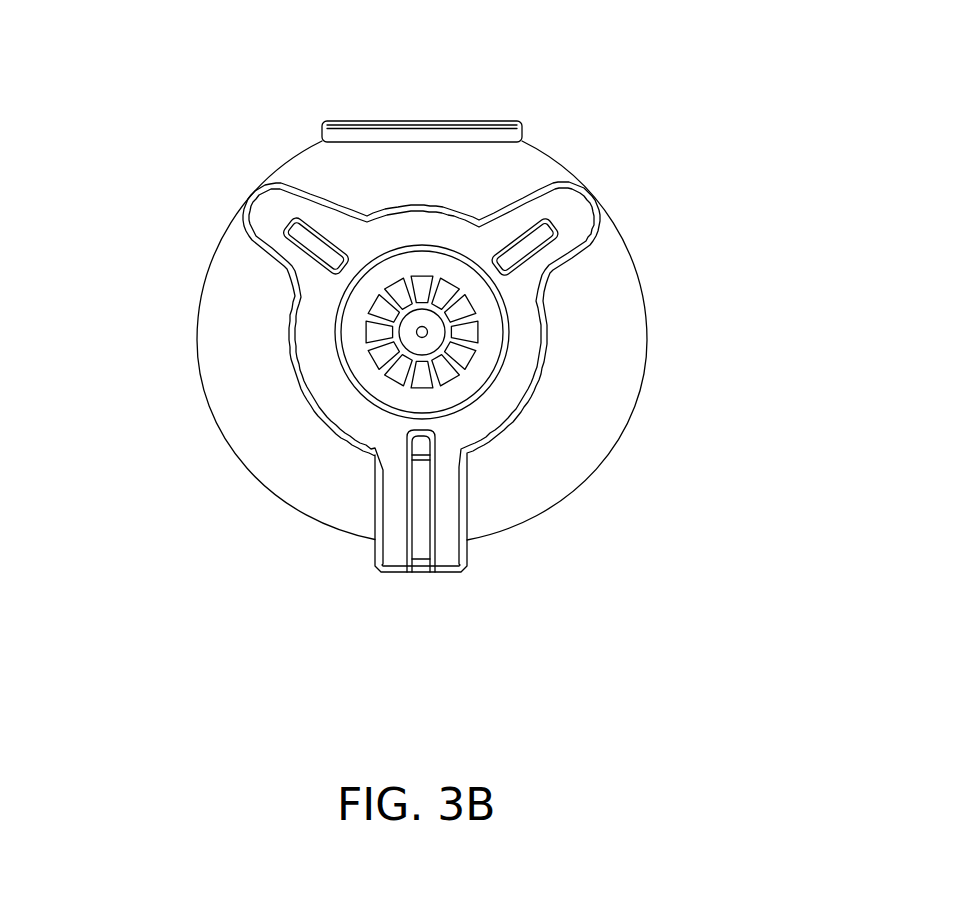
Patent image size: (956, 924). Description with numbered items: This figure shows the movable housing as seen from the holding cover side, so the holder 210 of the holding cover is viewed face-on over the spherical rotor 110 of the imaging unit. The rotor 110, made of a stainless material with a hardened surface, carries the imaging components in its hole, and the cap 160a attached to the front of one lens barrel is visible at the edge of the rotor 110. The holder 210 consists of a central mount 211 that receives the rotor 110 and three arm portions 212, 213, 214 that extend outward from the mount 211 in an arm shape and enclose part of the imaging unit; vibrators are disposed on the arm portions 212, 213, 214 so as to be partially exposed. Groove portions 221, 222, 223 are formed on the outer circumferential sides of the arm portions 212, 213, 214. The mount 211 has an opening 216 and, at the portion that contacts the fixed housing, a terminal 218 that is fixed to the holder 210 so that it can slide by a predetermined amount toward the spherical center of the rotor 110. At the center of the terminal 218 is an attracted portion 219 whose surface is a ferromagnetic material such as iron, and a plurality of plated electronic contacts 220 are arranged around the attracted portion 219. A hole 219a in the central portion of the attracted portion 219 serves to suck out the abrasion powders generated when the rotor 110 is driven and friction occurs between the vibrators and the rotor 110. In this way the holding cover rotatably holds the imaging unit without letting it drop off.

The rotor 110 is at (262, 487).
The cap 160a is at (517, 120).
The holder 210 is at (447, 545).
The mount 211 is at (293, 339).
The arm portion 212 is at (385, 564).
The arm portion 213 is at (202, 172).
The arm portion 214 is at (644, 179).
The opening 216 is at (438, 448).
The terminal 218 is at (513, 338).
The attracted portion 219 is at (400, 340).
The hole 219a is at (422, 326).
The electronic contact 220 is at (480, 362).
The groove portion 221 is at (440, 493).
The groove portion 222 is at (290, 236).
The groove portion 223 is at (563, 233).